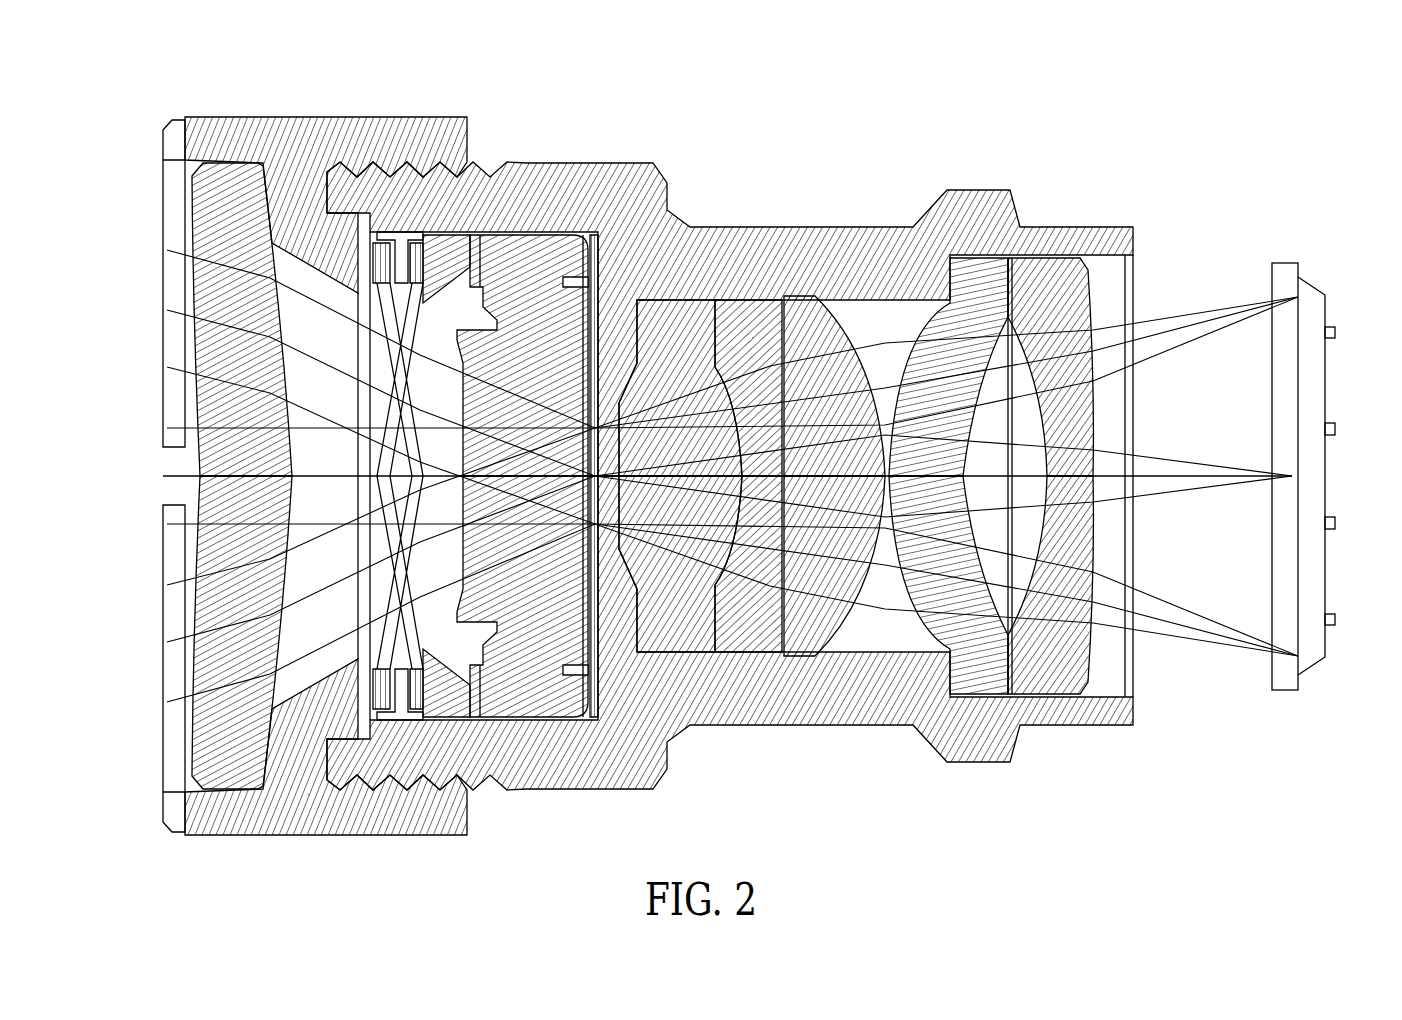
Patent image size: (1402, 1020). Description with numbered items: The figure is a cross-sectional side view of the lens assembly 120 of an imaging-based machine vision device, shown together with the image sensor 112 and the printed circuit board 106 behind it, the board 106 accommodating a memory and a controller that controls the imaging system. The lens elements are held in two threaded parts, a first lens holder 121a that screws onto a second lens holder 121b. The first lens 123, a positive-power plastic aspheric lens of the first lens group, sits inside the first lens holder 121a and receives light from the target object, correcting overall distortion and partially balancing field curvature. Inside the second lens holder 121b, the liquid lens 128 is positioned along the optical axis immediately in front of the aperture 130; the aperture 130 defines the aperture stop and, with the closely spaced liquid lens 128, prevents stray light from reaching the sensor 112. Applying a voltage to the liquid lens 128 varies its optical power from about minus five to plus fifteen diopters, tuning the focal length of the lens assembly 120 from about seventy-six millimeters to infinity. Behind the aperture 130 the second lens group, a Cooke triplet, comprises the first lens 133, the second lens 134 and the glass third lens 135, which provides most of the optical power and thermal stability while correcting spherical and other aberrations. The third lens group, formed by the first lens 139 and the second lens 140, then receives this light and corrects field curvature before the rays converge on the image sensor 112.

The lens assembly 120 is at (103, 70).
The first lens holder 121a is at (344, 108).
The second lens holder 121b is at (751, 217).
The first lens 123 is at (230, 148).
The liquid lens 128 is at (549, 222).
The aperture 130 is at (604, 418).
The first lens 133 is at (680, 668).
The second lens 134 is at (750, 668).
The third lens 135 is at (807, 668).
The first lens 139 is at (983, 712).
The second lens 140 is at (1059, 712).
The image sensor 112 is at (1285, 252).
The printed circuit board 106 is at (1309, 670).